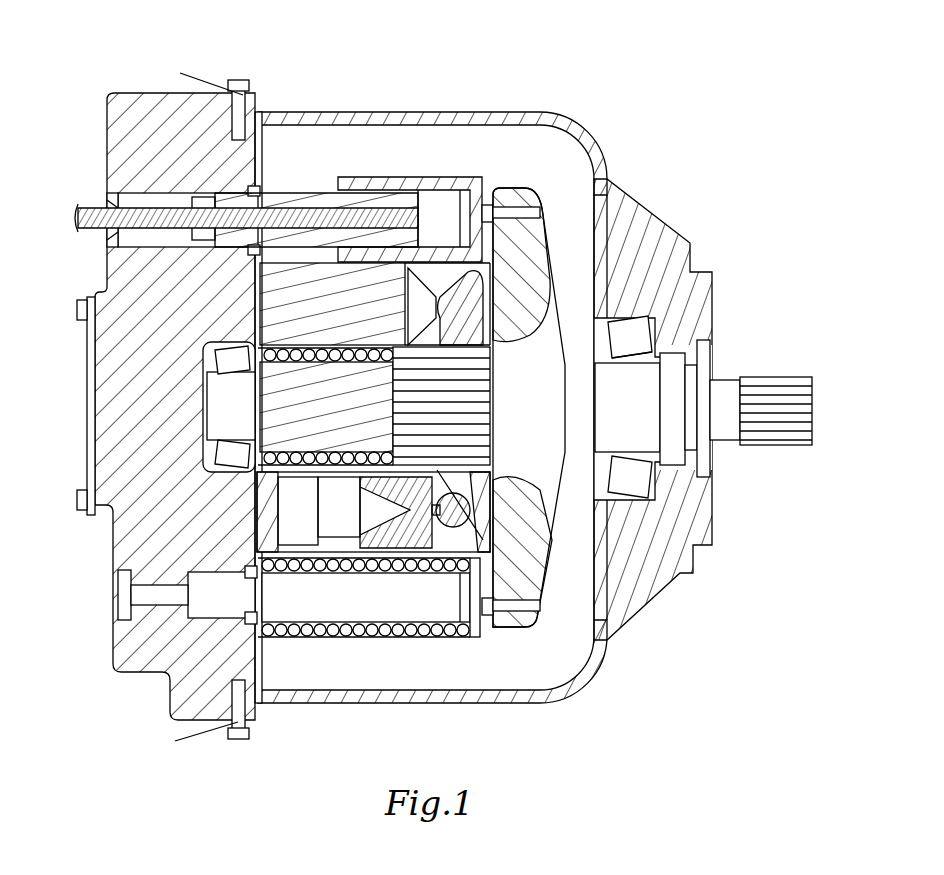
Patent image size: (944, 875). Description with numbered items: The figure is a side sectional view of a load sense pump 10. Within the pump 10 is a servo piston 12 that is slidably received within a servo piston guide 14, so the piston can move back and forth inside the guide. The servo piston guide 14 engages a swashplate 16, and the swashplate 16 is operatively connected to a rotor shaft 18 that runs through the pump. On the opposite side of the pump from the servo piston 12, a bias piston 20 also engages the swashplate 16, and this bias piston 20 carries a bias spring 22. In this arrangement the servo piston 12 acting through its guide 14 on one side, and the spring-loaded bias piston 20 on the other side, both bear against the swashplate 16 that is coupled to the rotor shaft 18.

The load sense pump 10 is at (433, 58).
The servo piston 12 is at (312, 190).
The servo piston guide 14 is at (472, 180).
The swashplate 16 is at (540, 240).
The rotor shaft 18 is at (785, 378).
The bias piston 20 is at (430, 576).
The bias spring 22 is at (330, 637).